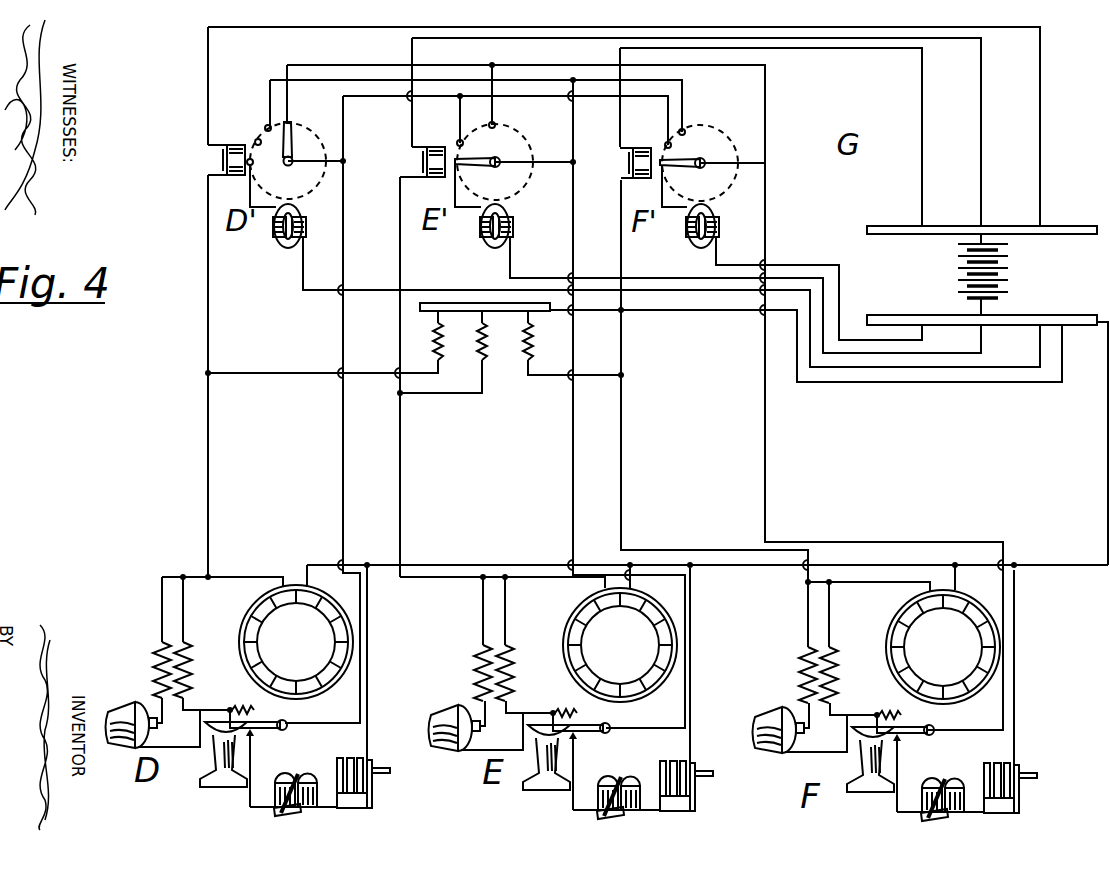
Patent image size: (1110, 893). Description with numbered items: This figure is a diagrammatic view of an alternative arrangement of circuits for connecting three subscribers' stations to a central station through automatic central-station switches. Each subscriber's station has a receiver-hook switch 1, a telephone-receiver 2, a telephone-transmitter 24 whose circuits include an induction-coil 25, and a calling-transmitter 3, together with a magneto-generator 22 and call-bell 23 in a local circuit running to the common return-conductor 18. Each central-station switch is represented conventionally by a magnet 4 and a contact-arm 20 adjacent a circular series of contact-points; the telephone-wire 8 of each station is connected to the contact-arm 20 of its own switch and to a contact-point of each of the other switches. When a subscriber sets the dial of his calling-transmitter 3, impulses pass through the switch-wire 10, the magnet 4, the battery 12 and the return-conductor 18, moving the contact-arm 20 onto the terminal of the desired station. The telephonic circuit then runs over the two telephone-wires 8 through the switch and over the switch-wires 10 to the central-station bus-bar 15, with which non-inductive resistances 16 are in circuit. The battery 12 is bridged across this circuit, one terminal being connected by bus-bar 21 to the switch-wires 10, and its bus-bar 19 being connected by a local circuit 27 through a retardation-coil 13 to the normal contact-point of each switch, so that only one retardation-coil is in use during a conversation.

The receiver-hook switch 1 is at (250, 719).
The telephone-receiver 2 is at (541, 757).
The calling-transmitter 3 is at (619, 644).
The magnet 4 is at (424, 163).
The telephone-wire 8 is at (391, 67).
The switch-wire 10 is at (871, 30).
The battery 12 is at (1005, 274).
The retardation-coil 13 is at (484, 234).
The central-station bus-bar 15 is at (469, 303).
The non-inductive resistance 16 is at (443, 340).
The common return-conductor 18 is at (512, 565).
The bus-bar 19 is at (1037, 318).
The contact-arm 20 is at (289, 132).
The bus-bar 21 is at (1052, 226).
The magneto-generator 22 is at (698, 796).
The call-bell 23 is at (599, 805).
The telephone-transmitter 24 is at (111, 712).
The induction-coil 25 is at (160, 645).
The local circuit 27 is at (302, 272).